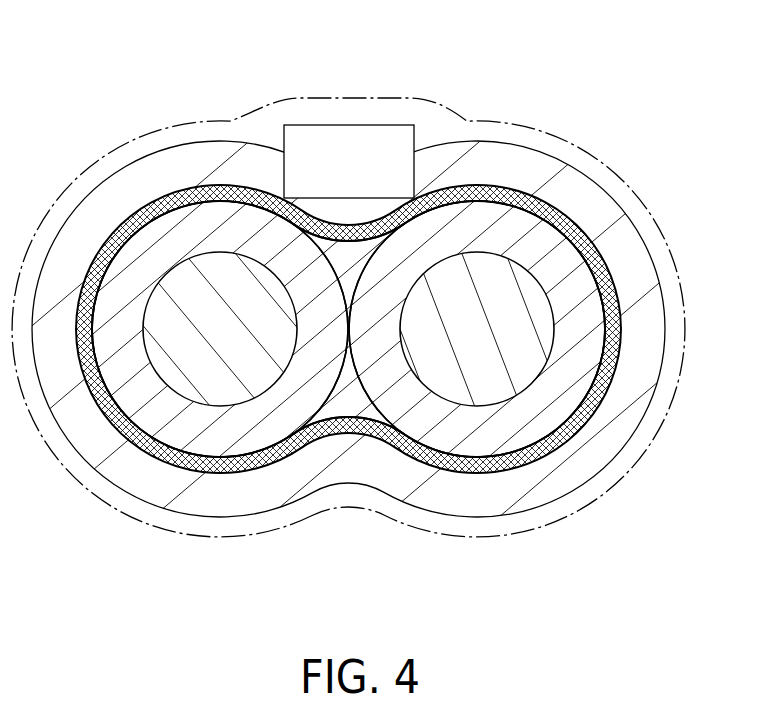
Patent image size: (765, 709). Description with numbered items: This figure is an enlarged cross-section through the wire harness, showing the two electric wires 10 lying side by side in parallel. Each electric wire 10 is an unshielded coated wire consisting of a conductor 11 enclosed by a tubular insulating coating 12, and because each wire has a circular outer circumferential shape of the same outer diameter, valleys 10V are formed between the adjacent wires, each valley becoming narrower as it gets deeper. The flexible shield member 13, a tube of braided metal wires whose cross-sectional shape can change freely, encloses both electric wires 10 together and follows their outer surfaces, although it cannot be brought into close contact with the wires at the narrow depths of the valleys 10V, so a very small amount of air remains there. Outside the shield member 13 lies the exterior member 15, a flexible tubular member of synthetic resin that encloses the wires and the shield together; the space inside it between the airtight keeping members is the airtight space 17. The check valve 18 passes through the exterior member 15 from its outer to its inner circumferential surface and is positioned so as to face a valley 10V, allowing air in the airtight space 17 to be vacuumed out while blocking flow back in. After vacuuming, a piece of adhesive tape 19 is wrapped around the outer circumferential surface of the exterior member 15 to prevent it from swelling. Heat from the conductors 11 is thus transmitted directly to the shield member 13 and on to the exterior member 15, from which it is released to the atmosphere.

The electric wire 10 is at (168, 603).
The conductor 11 is at (222, 374).
The insulating coating 12 is at (165, 418).
The shield member 13 is at (493, 195).
The exterior member 15 is at (172, 133).
The airtight space 17 is at (337, 406).
The check valve 18 is at (360, 135).
The adhesive tape 19 is at (102, 157).
The valley 10V is at (345, 232).